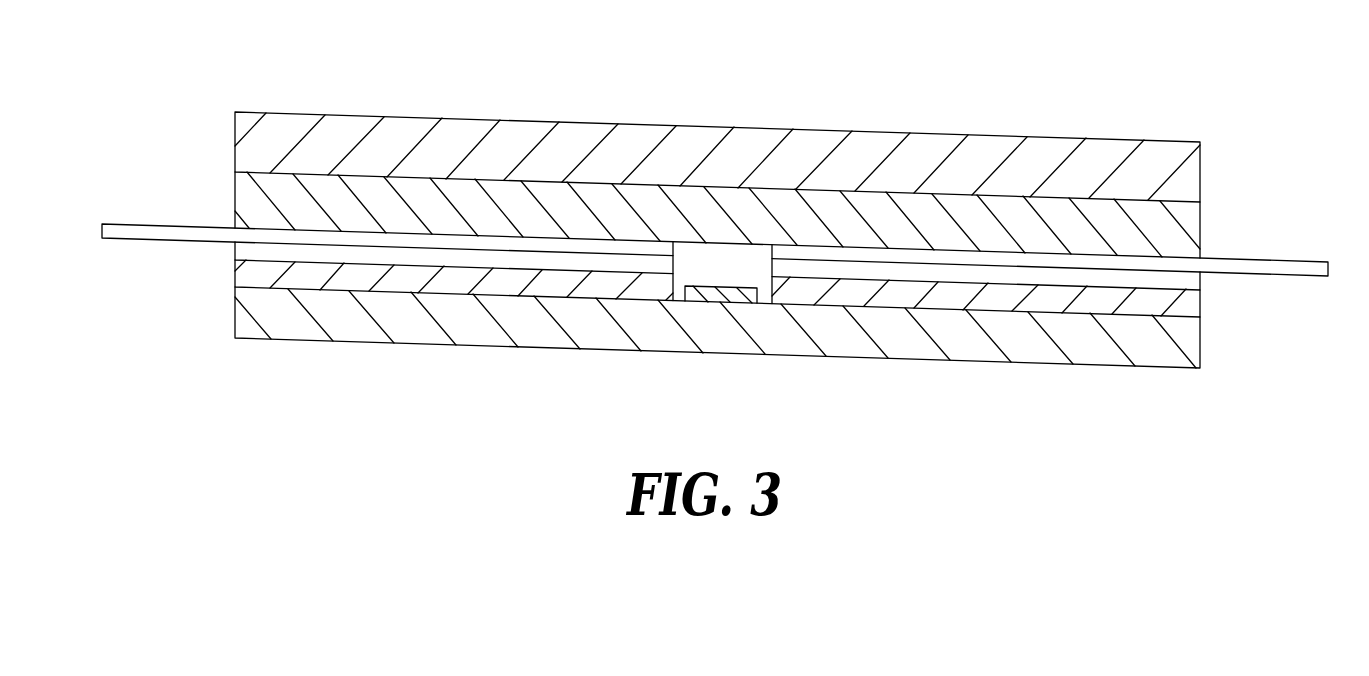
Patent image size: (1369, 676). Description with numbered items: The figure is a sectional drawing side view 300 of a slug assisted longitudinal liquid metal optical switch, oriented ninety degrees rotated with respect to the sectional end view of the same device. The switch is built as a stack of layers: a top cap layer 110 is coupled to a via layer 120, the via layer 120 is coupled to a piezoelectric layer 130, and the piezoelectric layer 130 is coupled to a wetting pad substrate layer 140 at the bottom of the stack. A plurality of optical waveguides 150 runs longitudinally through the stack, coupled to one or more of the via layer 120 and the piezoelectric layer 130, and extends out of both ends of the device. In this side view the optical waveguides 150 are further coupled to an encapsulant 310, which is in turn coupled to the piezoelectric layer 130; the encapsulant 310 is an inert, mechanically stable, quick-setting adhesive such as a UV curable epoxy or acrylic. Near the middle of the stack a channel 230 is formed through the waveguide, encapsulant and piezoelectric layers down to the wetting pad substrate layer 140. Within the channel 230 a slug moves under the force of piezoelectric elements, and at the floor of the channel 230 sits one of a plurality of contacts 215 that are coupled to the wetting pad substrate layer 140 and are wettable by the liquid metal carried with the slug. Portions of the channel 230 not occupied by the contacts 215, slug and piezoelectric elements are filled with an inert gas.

The sectional drawing side view 300 is at (158, 31).
The top cap layer 110 is at (235, 137).
The via layer 120 is at (233, 197).
The optical waveguide 150 is at (140, 223).
The encapsulant 310 is at (245, 250).
The piezoelectric layer 130 is at (233, 267).
The wetting pad substrate layer 140 is at (232, 327).
The channel 230 is at (693, 263).
The contact 215 is at (738, 300).